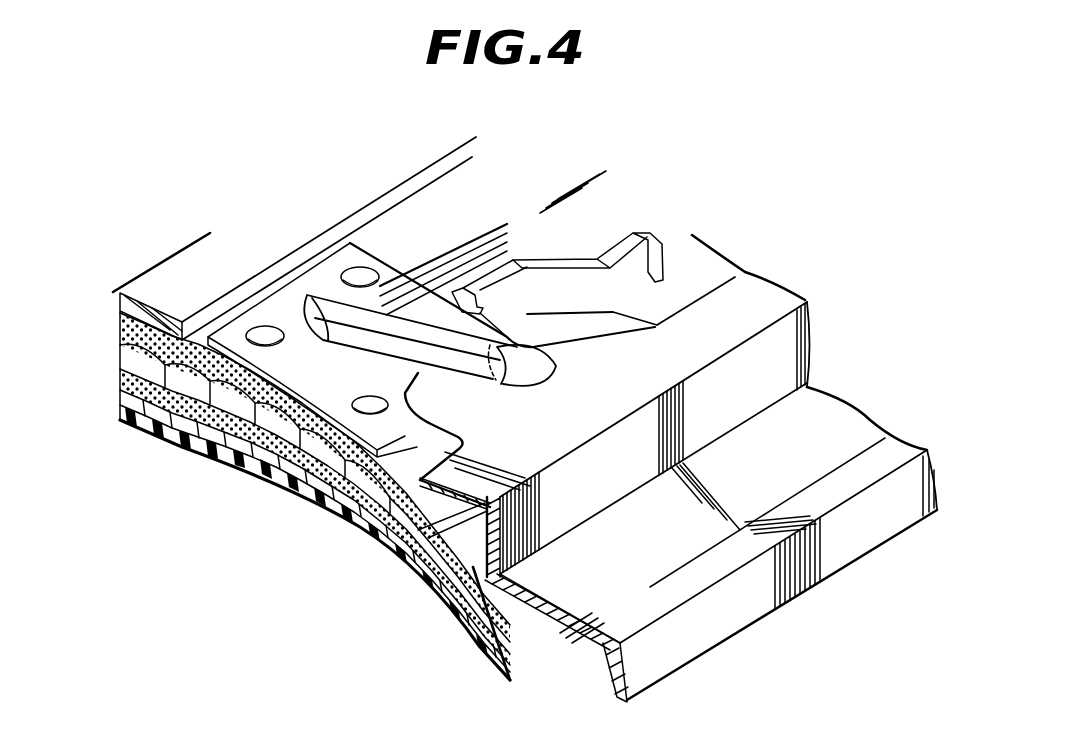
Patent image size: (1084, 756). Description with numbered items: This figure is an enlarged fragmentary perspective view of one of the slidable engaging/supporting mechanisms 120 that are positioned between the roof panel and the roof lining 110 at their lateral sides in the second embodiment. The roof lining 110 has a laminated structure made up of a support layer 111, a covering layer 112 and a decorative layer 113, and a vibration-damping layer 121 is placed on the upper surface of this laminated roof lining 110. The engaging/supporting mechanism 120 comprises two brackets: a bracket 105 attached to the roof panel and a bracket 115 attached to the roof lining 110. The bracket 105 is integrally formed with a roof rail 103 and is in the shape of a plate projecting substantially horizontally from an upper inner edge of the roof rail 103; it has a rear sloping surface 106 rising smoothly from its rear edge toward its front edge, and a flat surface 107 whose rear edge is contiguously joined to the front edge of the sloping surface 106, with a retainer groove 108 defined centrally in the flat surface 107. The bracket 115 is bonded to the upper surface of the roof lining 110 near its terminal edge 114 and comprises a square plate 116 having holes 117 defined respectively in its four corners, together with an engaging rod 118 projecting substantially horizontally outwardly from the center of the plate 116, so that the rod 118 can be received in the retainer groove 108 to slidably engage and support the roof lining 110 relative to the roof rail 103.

The roof rail 103 is at (798, 357).
The bracket 105 is at (427, 441).
The rear sloping surface 106 is at (594, 320).
The flat surface 107 is at (537, 328).
The retainer groove 108 is at (555, 378).
The roof lining 110 is at (228, 468).
The support layer 111 is at (130, 366).
The covering layer 112 is at (121, 324).
The decorative layer 113 is at (298, 496).
The terminal edge 114 is at (552, 607).
The bracket 115 is at (422, 275).
The square plate 116 is at (310, 278).
The holes 117 is at (360, 267).
The engaging rod 118 is at (490, 354).
The engaging/supporting mechanism 120 is at (507, 187).
The vibration-damping layer 121 is at (158, 282).